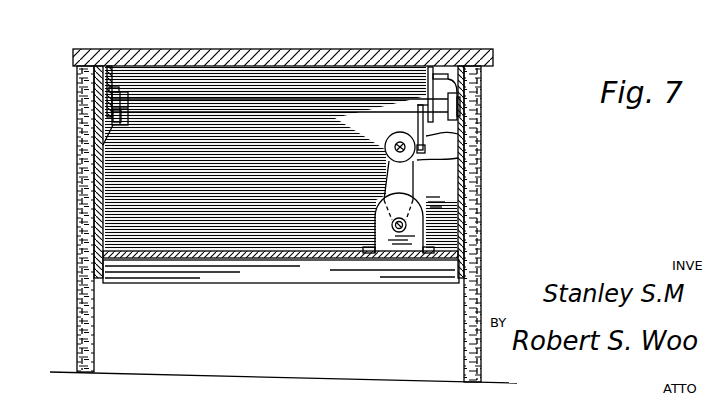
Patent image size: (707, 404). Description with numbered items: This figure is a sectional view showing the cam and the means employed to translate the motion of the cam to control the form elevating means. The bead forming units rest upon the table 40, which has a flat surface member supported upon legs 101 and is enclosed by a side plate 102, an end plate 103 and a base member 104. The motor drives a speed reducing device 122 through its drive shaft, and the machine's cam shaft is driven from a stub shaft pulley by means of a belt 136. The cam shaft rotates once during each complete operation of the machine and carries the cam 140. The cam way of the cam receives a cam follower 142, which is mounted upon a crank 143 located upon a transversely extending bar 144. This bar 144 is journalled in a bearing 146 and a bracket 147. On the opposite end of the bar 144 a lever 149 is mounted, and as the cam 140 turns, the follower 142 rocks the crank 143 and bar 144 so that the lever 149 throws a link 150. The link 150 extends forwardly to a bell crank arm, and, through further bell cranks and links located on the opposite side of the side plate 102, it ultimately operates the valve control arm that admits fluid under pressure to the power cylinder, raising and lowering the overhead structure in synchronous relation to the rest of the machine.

The table 40 is at (308, 53).
The legs 101 is at (77, 318).
The side plate 102 is at (98, 205).
The end plate 103 is at (125, 233).
The base member 104 is at (293, 259).
The speed reducing device 122 is at (450, 217).
The belt 136 is at (413, 178).
The cam 140 is at (481, 160).
The cam follower 142 is at (413, 135).
The crank 143 is at (483, 135).
The transversely extending bar 144 is at (235, 98).
The bearing 146 is at (114, 93).
The bracket 147 is at (450, 72).
The lever 149 is at (98, 158).
The link 150 is at (103, 132).